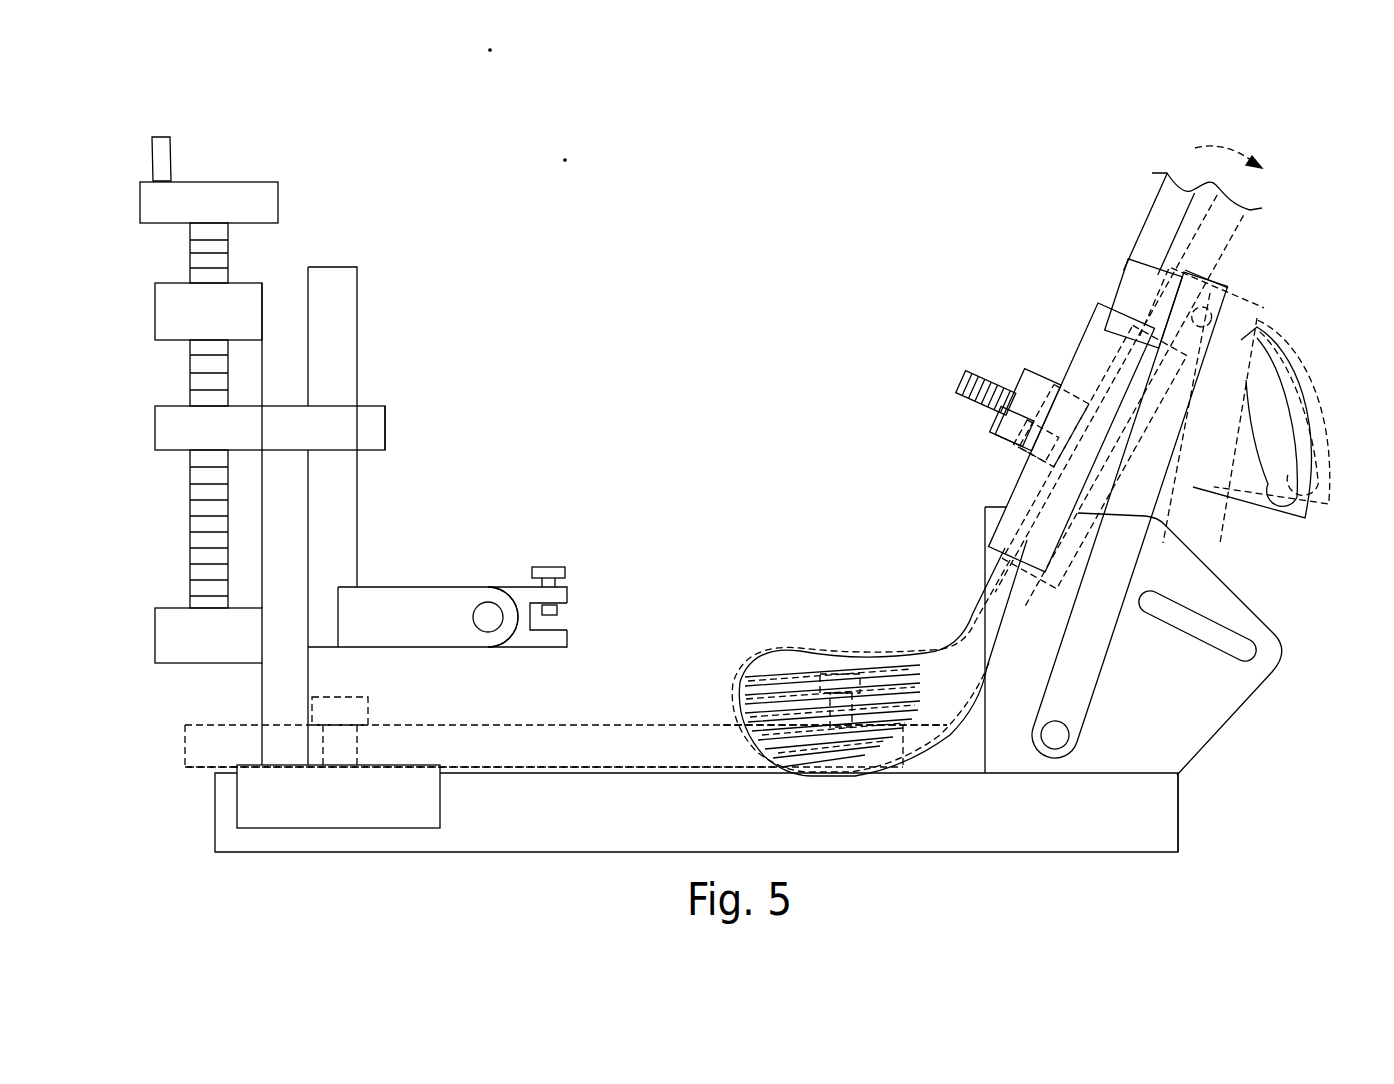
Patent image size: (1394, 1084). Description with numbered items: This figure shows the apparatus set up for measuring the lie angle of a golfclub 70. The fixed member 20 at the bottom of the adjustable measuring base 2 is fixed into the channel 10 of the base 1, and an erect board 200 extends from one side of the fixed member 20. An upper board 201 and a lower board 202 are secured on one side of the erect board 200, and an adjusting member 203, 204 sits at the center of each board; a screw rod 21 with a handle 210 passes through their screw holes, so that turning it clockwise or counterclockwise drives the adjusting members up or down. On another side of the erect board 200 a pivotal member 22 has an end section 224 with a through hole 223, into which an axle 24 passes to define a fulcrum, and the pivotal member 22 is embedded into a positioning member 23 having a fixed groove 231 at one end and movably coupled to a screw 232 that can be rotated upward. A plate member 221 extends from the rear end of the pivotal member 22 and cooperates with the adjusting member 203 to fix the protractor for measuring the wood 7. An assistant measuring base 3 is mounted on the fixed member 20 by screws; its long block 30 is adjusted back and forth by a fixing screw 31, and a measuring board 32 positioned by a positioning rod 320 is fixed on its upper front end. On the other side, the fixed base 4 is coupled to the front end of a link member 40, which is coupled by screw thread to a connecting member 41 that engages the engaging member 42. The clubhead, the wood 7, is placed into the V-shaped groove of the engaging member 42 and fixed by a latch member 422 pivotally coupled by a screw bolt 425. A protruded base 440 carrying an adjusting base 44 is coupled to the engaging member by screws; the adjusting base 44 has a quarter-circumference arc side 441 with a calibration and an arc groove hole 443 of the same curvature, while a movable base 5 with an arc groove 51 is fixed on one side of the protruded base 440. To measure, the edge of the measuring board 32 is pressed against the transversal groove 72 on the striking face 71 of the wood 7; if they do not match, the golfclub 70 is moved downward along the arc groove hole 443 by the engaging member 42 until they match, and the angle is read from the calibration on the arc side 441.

The base 1 is at (1148, 815).
The channel 10 is at (447, 795).
The adjustable measuring base 2 is at (418, 392).
The fixed member 20 is at (310, 803).
The erect board 200 is at (288, 683).
The upper board 201 is at (232, 323).
The lower board 202 is at (212, 640).
The adjusting member 203 is at (318, 430).
The adjusting member 204 is at (367, 433).
The screw rod 21 is at (220, 248).
The handle 210 is at (163, 153).
The pivotal member 22 is at (395, 575).
The plate member 221 is at (332, 317).
The through hole 223 is at (503, 624).
The end section 224 is at (474, 597).
The positioning member 23 is at (572, 658).
The fixed groove 231 is at (548, 622).
The screw 232 is at (552, 575).
The axle 24 is at (487, 612).
The assistant measuring base 3 is at (443, 712).
The long block 30 is at (517, 740).
The fixing screw 31 is at (340, 713).
The measuring board 32 is at (743, 720).
The positioning rod 320 is at (797, 677).
The fixed base 4 is at (1290, 280).
The link member 40 is at (1160, 523).
The connecting member 41 is at (1210, 282).
The engaging member 42 is at (1105, 340).
The latch member 422 is at (1010, 430).
The screw bolt 425 is at (965, 377).
The adjusting base 44 is at (1245, 482).
The protruded base 440 is at (1082, 687).
The arc side 441 is at (1293, 347).
The arc groove hole 443 is at (1280, 455).
The movable base 5 is at (1190, 707).
The arc groove 51 is at (1233, 640).
The wood 7 is at (890, 650).
The golfclub 70 is at (1163, 228).
The striking face 71 is at (851, 665).
The transversal groove 72 is at (822, 677).